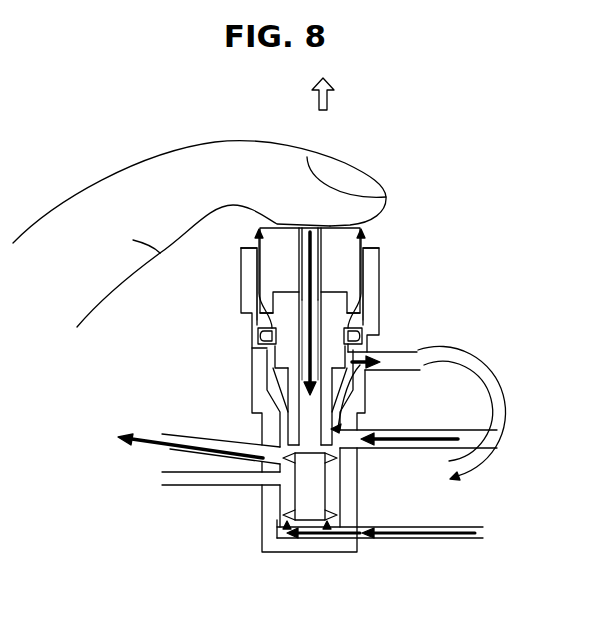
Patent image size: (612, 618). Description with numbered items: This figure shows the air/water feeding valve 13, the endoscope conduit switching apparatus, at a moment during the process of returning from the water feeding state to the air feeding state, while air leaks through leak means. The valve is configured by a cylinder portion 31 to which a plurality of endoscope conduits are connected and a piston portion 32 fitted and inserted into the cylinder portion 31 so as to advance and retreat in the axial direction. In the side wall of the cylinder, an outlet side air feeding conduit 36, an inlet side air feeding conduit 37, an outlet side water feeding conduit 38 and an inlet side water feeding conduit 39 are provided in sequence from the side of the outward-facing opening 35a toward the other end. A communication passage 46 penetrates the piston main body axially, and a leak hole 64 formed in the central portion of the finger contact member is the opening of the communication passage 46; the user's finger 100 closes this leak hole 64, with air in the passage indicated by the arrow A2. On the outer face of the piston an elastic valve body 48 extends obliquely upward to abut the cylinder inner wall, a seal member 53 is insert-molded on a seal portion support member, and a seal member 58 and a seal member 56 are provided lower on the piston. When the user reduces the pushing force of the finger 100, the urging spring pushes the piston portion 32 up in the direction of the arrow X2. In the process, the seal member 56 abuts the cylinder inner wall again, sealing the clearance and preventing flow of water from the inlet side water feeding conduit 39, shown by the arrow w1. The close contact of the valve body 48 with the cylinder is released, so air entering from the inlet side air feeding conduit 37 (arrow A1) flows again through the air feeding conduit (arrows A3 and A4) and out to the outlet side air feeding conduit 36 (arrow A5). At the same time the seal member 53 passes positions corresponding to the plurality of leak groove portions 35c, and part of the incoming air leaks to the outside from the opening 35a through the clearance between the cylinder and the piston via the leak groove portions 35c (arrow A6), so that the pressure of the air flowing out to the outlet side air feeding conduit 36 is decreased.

The finger 100 is at (143, 188).
The arrow X2 is at (341, 96).
The air/water feeding valve 13 is at (481, 175).
The cylinder portion 31 is at (372, 300).
The piston portion 32 is at (343, 252).
The leak hole 64 is at (313, 235).
The arrow A2 is at (325, 236).
The communication passage 46 is at (315, 282).
The arrow A6 is at (363, 242).
The opening 35a is at (378, 284).
The seal member 53 is at (356, 331).
The leak groove portions 35c is at (364, 345).
The arrow A3 is at (383, 348).
The arrow A4 is at (477, 368).
The valve body 48 is at (272, 372).
The inlet side air feeding conduit 37 is at (418, 430).
The arrow A1 is at (404, 440).
The outlet side air feeding conduit 36 is at (220, 443).
The arrow A5 is at (193, 446).
The outlet side water feeding conduit 38 is at (183, 487).
The seal member 56 is at (287, 520).
The seal member 58 is at (289, 465).
The inlet side water feeding conduit 39 is at (402, 540).
The arrow W1 w1 is at (453, 540).